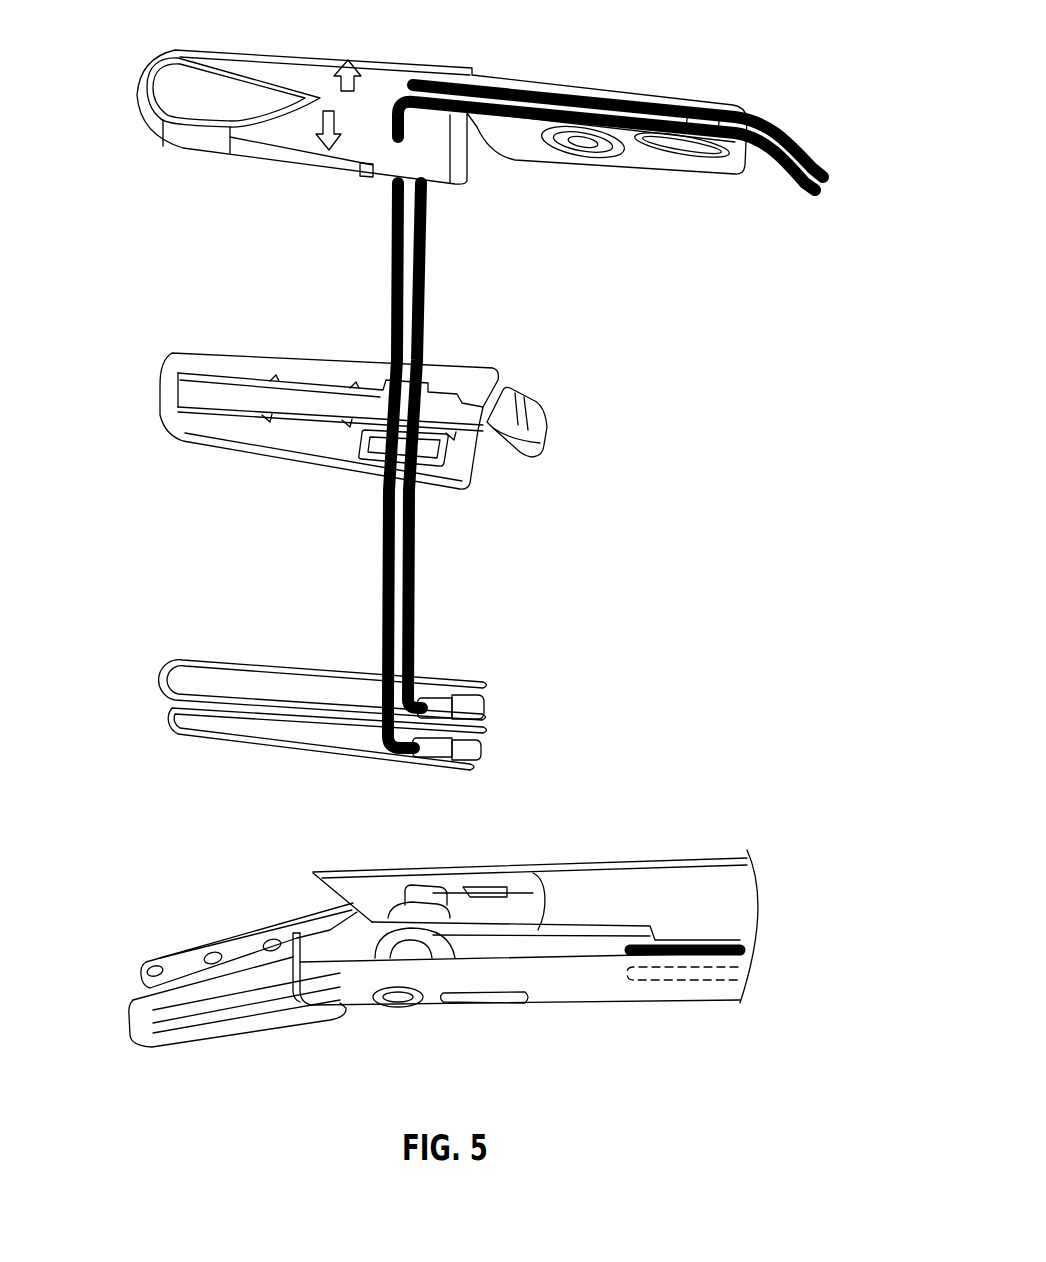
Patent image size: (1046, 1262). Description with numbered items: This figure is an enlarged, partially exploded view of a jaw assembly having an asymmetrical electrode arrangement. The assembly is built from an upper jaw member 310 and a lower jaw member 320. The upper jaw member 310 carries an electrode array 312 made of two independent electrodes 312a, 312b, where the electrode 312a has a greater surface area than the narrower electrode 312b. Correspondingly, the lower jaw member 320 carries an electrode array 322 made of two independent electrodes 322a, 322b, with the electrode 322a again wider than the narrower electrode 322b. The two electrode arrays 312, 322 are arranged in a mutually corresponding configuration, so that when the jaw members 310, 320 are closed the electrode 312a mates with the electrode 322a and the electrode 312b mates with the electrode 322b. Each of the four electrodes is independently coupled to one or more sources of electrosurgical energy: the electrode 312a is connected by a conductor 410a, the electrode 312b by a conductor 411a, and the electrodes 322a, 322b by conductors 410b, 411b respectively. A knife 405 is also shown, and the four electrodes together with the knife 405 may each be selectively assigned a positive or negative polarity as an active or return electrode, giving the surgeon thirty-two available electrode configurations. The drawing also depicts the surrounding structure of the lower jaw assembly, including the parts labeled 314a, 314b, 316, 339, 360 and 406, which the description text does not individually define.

The upper jaw member 310 is at (110, 62).
The electrode array 312 is at (158, 650).
The electrode 312a is at (267, 685).
The electrode 312b is at (303, 730).
The upper shaft half 314a is at (345, 870).
The lower shaft half 314b is at (358, 1000).
The slide housing 316 is at (307, 63).
The lower jaw member 320 is at (190, 1072).
The electrode array 322 is at (110, 962).
The electrode 322a is at (243, 947).
The electrode 322b is at (190, 997).
The apertures 339 is at (272, 940).
The cam member 360 is at (425, 887).
The knife 405 is at (385, 905).
The spool 406 is at (362, 930).
The conductor 410a is at (780, 153).
The conductor 410b is at (707, 943).
The conductor 411a is at (787, 190).
The conductor 411b is at (700, 982).